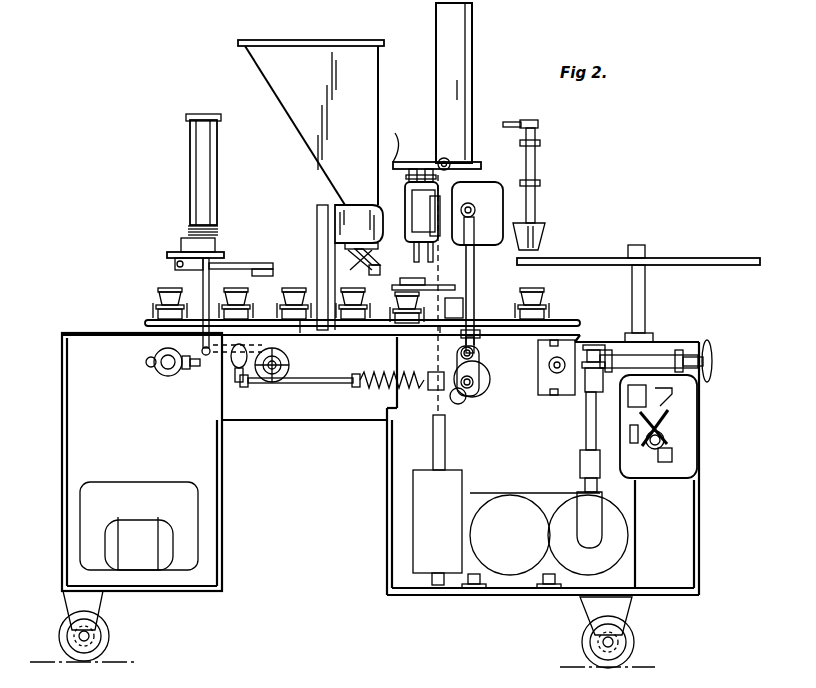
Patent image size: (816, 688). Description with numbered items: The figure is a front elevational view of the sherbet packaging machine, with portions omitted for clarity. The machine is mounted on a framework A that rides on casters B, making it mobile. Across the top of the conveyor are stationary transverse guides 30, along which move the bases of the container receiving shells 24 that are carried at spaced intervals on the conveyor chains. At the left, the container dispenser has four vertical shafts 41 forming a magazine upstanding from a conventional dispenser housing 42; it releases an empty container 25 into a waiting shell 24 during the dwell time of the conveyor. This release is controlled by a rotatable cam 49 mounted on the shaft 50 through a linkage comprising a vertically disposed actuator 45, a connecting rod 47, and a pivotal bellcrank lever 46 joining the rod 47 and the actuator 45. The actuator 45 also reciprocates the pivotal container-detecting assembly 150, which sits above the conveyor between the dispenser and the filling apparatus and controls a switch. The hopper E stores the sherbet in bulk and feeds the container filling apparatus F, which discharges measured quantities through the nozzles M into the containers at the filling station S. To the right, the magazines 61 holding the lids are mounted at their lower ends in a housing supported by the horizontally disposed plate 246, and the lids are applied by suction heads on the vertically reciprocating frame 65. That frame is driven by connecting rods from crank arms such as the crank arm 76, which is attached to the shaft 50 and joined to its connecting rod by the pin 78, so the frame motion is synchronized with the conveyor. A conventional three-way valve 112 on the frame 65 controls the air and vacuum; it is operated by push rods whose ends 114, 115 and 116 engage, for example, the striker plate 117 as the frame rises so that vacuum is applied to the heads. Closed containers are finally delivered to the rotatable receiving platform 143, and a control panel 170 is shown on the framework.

The hopper E is at (367, 92).
The container filling apparatus F is at (350, 267).
The nozzles M is at (364, 262).
The magazines 61 is at (458, 43).
The horizontally disposed plate 246 is at (397, 139).
The striker plate 117 is at (411, 168).
The upper end of push rod 115 is at (452, 165).
The reciprocating frame 65 is at (406, 192).
The three-way valve 112 is at (414, 246).
The lower end of push rod 114 is at (414, 262).
The lower end of push rod 116 is at (434, 256).
The rotatable receiving platform 143 is at (707, 258).
The vertical shafts 41 is at (190, 158).
The container 25 is at (218, 228).
The dispenser housing 42 is at (214, 257).
The actuator 45 is at (203, 284).
The container-detecting assembly 150 is at (269, 263).
The container receiving shells 24 is at (157, 294).
The station S is at (268, 297).
The stationary transverse guides 30 is at (378, 327).
The pivotal bellcrank lever 46 is at (235, 373).
The connecting rod 47 is at (325, 384).
The pin 78 is at (478, 353).
The crank arm 76 is at (478, 364).
The rotatable cam 49 is at (490, 382).
The shaft 50 is at (470, 396).
The control panel 170 is at (690, 468).
The framework A is at (62, 592).
The casters B is at (110, 637).